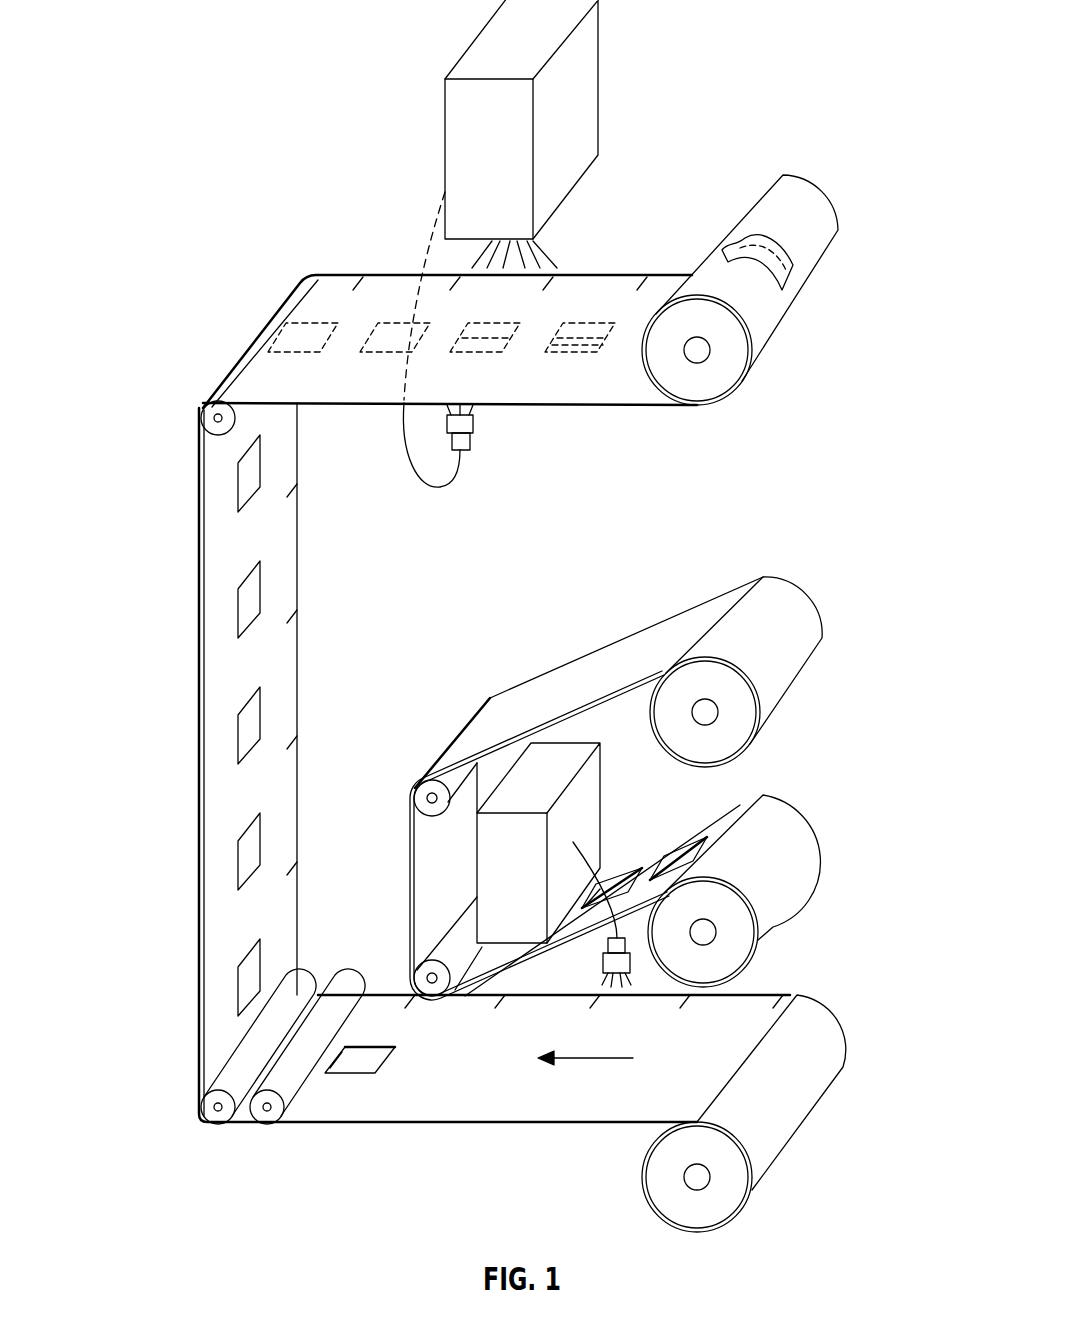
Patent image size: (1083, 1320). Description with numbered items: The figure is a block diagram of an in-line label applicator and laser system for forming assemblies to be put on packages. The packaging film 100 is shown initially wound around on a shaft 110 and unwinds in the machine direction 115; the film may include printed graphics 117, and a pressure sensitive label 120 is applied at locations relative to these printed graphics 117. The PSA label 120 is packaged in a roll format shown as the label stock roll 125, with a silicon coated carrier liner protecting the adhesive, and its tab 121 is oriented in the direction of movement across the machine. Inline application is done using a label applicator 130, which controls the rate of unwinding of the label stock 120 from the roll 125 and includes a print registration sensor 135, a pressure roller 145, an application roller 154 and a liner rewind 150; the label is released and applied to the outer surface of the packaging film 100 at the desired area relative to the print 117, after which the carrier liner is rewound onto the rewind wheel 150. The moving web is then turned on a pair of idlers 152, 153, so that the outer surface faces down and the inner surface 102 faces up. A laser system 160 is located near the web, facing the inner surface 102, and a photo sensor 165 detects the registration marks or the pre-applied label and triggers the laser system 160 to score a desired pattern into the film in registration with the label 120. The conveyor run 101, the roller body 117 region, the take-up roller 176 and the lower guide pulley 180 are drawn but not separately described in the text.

The packaging film 100 is at (490, 1105).
The conveyor belt 101 is at (424, 1116).
The inner surface of the packaging film 102 is at (260, 383).
The shaft 110 is at (665, 1194).
The machine direction 115 is at (593, 1063).
The printed graphics 117 is at (785, 995).
The pressure sensitive label 120 is at (683, 843).
The tab 121 is at (652, 870).
The label stock roll 125 is at (735, 922).
The label applicator 130 is at (575, 800).
The print registration sensor 135 is at (604, 963).
The pressure roller 145 is at (412, 793).
The liner rewind 150 is at (683, 690).
The idler 152 is at (205, 1116).
The idler 153 is at (205, 412).
The application roller 154 is at (269, 1122).
The laser system 160 is at (460, 118).
The photo sensor 165 is at (474, 441).
The take-up roller 176 is at (788, 190).
The guide pulley 180 is at (450, 997).